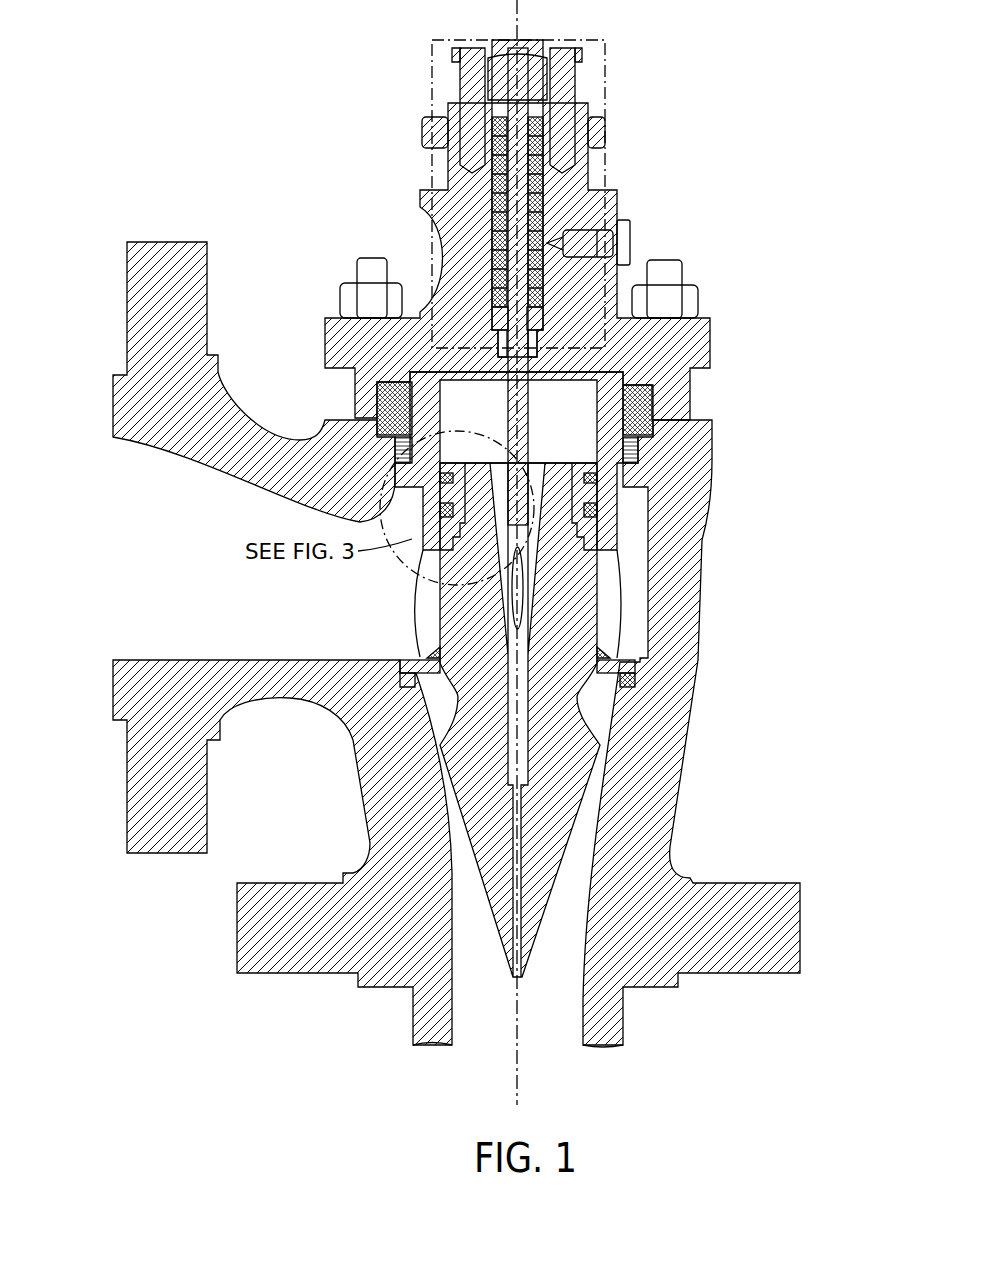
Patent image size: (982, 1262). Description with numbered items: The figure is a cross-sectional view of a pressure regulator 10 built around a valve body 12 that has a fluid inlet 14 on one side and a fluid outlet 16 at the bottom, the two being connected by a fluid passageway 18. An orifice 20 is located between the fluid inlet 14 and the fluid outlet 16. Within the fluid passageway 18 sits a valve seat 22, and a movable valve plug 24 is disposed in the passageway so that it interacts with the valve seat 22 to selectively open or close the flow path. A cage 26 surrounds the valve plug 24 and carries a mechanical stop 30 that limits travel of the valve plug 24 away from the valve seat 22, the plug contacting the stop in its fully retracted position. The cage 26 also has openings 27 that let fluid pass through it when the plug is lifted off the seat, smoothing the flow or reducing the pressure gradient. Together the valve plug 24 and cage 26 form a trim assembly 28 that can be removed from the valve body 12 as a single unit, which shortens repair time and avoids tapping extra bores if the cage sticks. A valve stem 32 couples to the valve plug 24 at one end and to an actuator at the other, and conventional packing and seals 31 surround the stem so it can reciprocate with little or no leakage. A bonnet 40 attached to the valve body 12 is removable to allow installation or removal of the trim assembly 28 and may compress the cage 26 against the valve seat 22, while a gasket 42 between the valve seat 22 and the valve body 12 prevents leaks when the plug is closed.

The pressure regulator 10 is at (205, 78).
The valve body 12 is at (698, 492).
The fluid inlet 14 is at (123, 575).
The fluid outlet 16 is at (575, 1009).
The fluid passageway 18 is at (266, 632).
The orifice 20 is at (423, 740).
The valve seat 22 is at (647, 784).
The valve plug 24 is at (540, 882).
The cage 26 is at (628, 510).
The openings 27 is at (610, 600).
The trim assembly 28 is at (642, 548).
The mechanical stop 30 is at (612, 634).
The packing and/or seals 31 is at (472, 210).
The valve stem 32 is at (520, 444).
The bonnet 40 is at (628, 190).
The gasket 42 is at (645, 681).